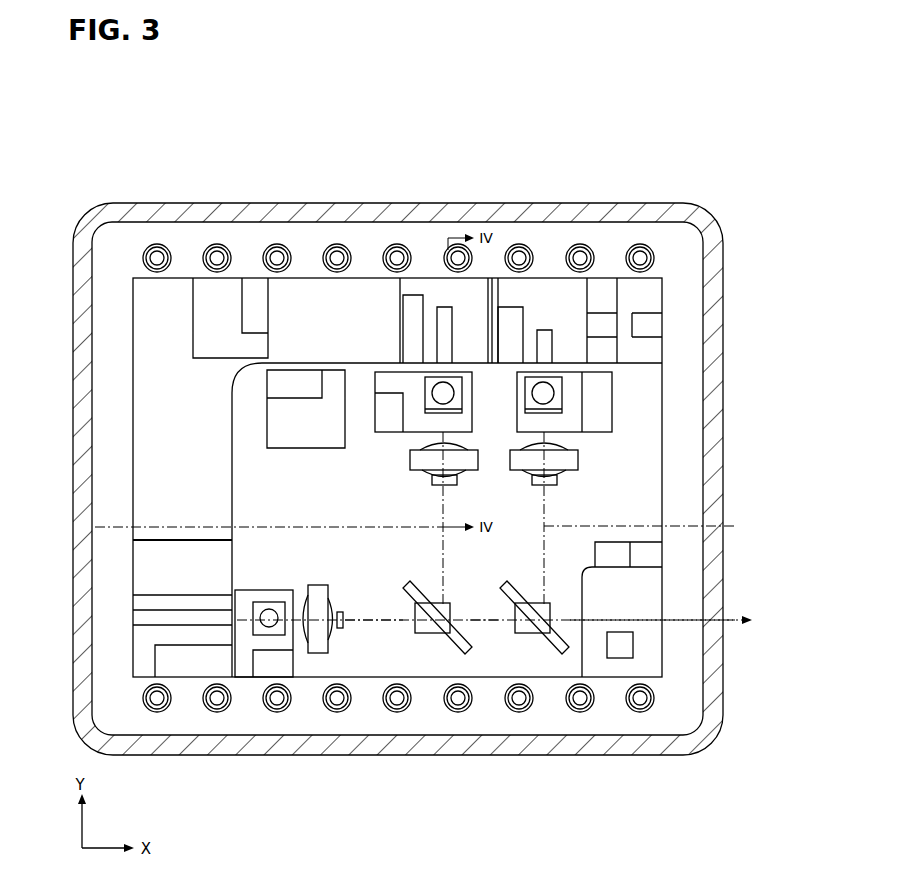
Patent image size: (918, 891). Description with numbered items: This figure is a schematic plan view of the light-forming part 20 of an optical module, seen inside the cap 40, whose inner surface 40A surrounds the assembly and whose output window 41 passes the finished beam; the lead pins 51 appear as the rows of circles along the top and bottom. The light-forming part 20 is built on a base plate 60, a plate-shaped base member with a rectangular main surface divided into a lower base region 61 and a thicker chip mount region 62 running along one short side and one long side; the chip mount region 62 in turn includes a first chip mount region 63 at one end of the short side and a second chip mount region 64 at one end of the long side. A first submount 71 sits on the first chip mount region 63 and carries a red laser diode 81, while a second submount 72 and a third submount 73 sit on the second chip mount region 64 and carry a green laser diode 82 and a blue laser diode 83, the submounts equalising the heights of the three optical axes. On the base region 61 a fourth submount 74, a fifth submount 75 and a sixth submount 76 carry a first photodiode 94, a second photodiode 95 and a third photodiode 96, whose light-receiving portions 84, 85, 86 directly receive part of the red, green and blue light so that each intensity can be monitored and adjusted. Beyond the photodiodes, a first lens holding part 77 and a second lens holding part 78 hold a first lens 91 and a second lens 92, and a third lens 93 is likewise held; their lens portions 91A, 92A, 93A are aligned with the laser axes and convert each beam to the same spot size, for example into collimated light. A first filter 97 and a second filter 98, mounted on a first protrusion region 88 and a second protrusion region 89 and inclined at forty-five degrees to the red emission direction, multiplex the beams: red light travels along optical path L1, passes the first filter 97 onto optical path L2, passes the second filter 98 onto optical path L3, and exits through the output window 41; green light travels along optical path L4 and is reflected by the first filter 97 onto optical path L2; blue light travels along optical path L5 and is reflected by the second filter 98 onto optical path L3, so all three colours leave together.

The light-forming part 20 is at (670, 258).
The cap 40 is at (718, 262).
The inner wall surface of housing 40A is at (694, 294).
The output window 41 is at (718, 604).
The lead pins 51 is at (217, 246).
The base plate 60 is at (670, 513).
The base region 61 is at (493, 660).
The chip mount region 62 is at (150, 412).
The first chip mount region 63 is at (142, 577).
The second chip mount region 64 is at (602, 297).
The first submount 71 is at (132, 645).
The second submount 72 is at (432, 430).
The third submount 73 is at (540, 297).
The fourth submount 74 is at (272, 643).
The fifth submount 75 is at (383, 383).
The sixth submount 76 is at (600, 418).
The first lens holding part 77 is at (341, 632).
The second lens holding part 78 is at (432, 483).
The red laser diode 81 is at (132, 618).
The green laser diode 82 is at (445, 305).
The blue laser diode 83 is at (546, 328).
The light-receiving portion 84 is at (243, 642).
The light-receiving portion 85 is at (453, 378).
The light-receiving portion 86 is at (614, 382).
The first protrusion region 88 is at (424, 656).
The second protrusion region 89 is at (530, 656).
The first lens 91 is at (319, 656).
The lens portion 91A is at (293, 680).
The second lens 92 is at (410, 458).
The lens portion 92A is at (424, 442).
The third lens 93 is at (580, 459).
The lens portion 93A is at (585, 441).
The first photodiode 94 is at (257, 630).
The second photodiode 95 is at (414, 292).
The third photodiode 96 is at (566, 399).
The first filter 97 is at (441, 637).
The second filter 98 is at (548, 637).
The optical path L1 is at (364, 624).
The optical path L2 is at (480, 626).
The optical path L3 is at (595, 626).
The optical path L4 is at (241, 527).
The optical path L5 is at (650, 526).